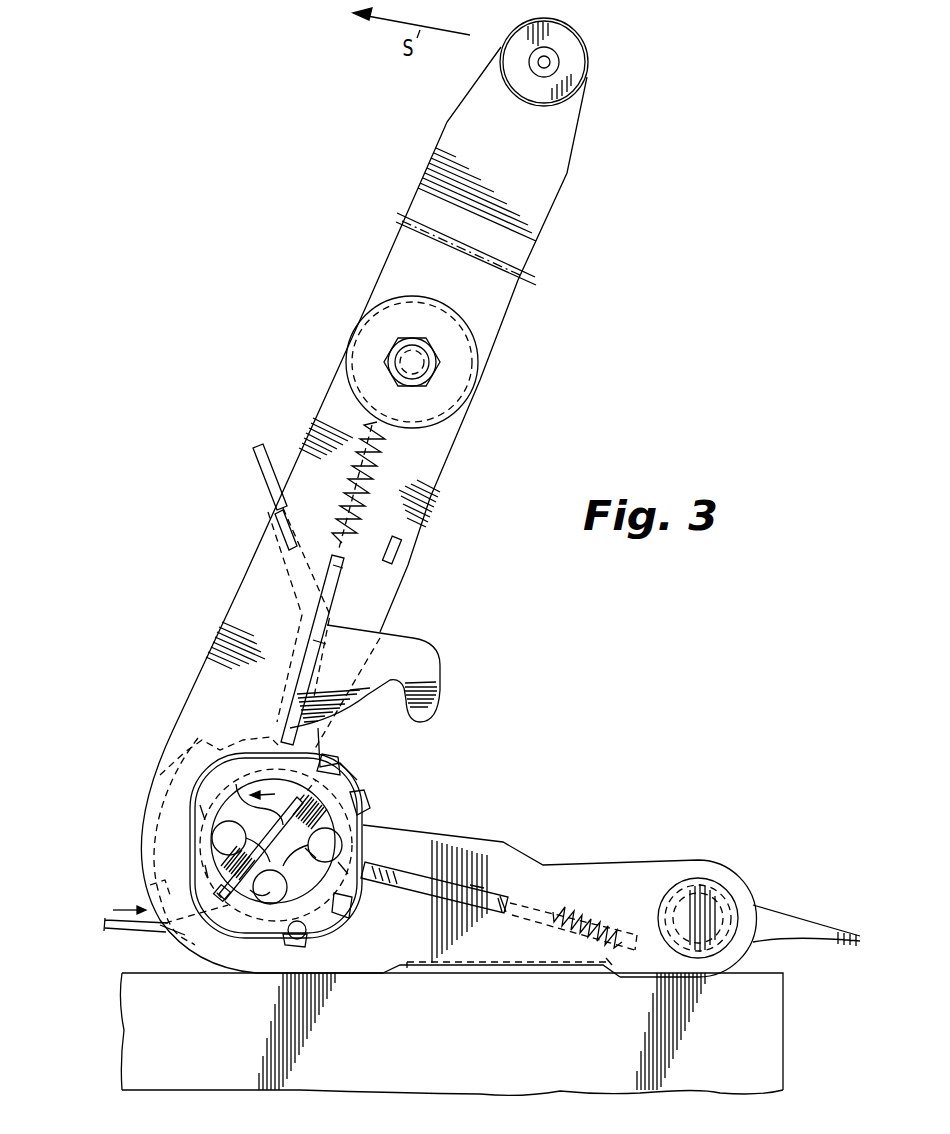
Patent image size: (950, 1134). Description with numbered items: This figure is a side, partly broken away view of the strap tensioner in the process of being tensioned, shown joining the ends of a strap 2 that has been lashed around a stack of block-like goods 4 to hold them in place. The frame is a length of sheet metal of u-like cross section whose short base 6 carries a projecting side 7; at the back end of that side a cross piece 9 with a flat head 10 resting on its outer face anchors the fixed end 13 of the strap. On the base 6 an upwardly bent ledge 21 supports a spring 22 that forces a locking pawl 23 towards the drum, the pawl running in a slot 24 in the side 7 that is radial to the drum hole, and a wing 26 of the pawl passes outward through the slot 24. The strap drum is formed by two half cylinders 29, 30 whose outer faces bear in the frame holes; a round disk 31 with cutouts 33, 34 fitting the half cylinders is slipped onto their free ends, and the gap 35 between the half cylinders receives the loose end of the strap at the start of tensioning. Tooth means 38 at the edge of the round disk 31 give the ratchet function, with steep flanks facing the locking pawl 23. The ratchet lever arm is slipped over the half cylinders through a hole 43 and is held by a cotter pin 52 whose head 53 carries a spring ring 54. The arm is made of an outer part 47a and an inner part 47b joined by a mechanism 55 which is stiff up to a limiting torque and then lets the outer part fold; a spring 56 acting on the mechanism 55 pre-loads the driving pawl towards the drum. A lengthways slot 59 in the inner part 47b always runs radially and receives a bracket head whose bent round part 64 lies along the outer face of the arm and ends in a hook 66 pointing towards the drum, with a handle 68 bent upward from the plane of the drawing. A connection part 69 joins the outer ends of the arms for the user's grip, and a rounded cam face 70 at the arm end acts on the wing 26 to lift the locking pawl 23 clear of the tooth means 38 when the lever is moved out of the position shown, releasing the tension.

The strap 2 is at (113, 932).
The block-like goods 4 is at (773, 1007).
The base 6 is at (518, 977).
The side 7 is at (373, 951).
The cross piece 9 is at (690, 905).
The flat head 10 is at (712, 877).
The fixed end of the strap 13 is at (783, 917).
The ledge 21 is at (615, 977).
The spring 22 is at (601, 910).
The locking pawl 23 is at (406, 868).
The slot 24 is at (507, 898).
The wing 26 is at (477, 890).
The half cylinder 29 is at (215, 843).
The half cylinder 30 is at (322, 832).
The round disk 31 is at (272, 863).
The cutout 33 is at (307, 920).
The cutout 34 is at (312, 853).
The gap 35 is at (343, 868).
The tooth means 38 is at (358, 782).
The hole 43 is at (258, 895).
The outer part of arm 47a is at (525, 171).
The inner part of arm 47b is at (254, 698).
The cotter pin 52 is at (206, 870).
The head 53 is at (223, 898).
The spring ring 54 is at (203, 812).
The mechanism 55 is at (458, 384).
The spring 56 is at (393, 470).
The lengthways slot 59 is at (331, 600).
The bent round part 64 is at (394, 668).
The hook 66 is at (423, 712).
The handle 68 is at (262, 477).
The connection part 69 is at (577, 61).
The cam face 70 is at (172, 927).